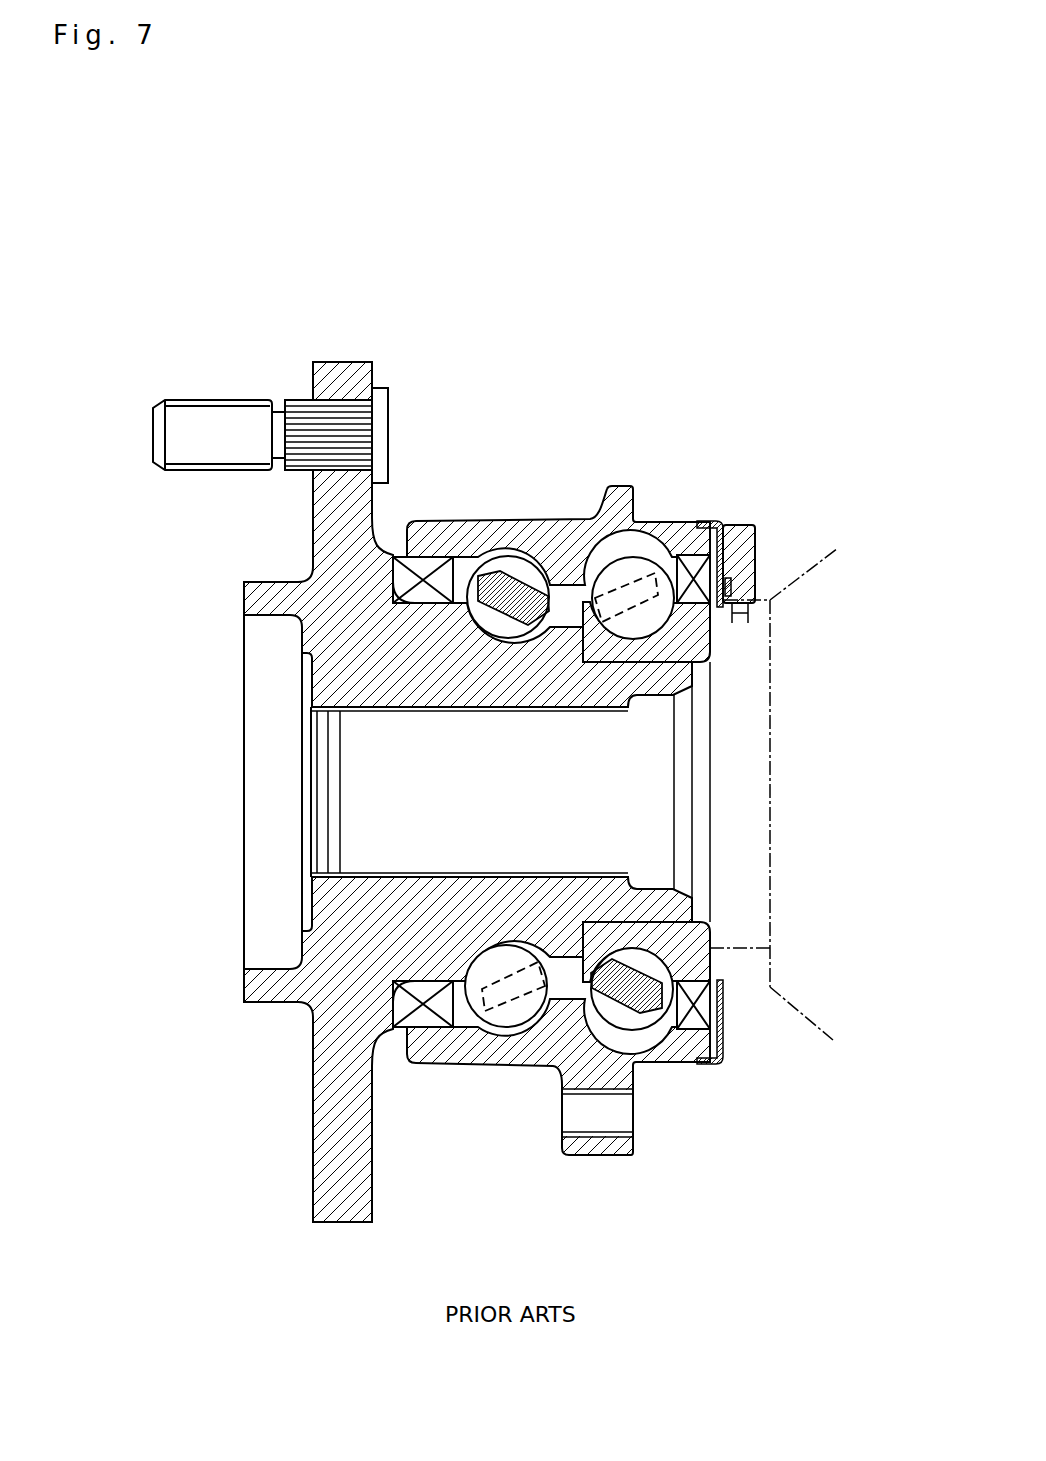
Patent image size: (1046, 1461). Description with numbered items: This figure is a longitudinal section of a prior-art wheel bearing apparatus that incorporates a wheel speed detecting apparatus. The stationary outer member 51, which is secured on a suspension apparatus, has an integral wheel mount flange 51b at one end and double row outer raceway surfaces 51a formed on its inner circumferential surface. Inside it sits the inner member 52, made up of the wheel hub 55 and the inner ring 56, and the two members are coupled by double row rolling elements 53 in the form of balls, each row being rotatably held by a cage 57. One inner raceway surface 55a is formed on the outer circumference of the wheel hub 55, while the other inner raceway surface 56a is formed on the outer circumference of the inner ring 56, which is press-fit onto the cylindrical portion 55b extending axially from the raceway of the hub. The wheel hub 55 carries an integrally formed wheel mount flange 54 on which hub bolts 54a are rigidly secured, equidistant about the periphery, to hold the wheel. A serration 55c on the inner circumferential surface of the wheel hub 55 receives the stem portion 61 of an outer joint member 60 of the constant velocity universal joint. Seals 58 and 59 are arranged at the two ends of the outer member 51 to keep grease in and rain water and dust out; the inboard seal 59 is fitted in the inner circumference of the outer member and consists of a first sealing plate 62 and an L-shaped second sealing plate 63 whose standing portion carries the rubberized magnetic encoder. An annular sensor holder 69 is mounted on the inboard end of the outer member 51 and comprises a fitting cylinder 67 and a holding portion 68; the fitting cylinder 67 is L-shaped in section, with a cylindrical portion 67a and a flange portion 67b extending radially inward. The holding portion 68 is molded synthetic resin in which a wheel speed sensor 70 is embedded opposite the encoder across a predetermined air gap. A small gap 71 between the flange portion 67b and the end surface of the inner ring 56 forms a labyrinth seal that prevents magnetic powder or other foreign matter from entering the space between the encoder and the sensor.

The outer member 51 is at (540, 525).
The outer raceway surface 51a is at (637, 1005).
The wheel mount flange 51b is at (600, 1158).
The inner member 52 is at (390, 690).
The rolling elements 53 is at (505, 575).
The wheel mount flange 54 is at (345, 370).
The hub bolt 54a is at (213, 420).
The wheel hub 55 is at (335, 677).
The inner raceway surface 55a is at (477, 630).
The cylindrical portion 55b is at (600, 930).
The serration 55c is at (395, 880).
The inner ring 56 is at (712, 930).
The inner raceway surface 56a is at (648, 895).
The cage 57 is at (580, 628).
The seal 58 is at (420, 560).
The seal 59 is at (675, 548).
The outer joint member 60 is at (790, 785).
The stem portion 61 is at (690, 698).
The first sealing plate 62 is at (655, 1010).
The second sealing plate 63 is at (712, 1007).
The fitting cylinder 67 is at (703, 518).
The cylindrical portion 67a is at (705, 1066).
The flange portion 67b is at (722, 1062).
The holding portion 68 is at (755, 548).
The annular sensor holder 69 is at (740, 565).
The wheel speed sensor 70 is at (842, 556).
The small gap 71 is at (712, 603).